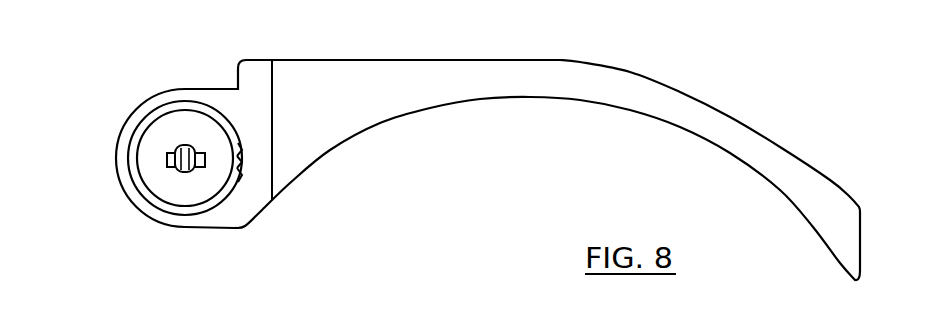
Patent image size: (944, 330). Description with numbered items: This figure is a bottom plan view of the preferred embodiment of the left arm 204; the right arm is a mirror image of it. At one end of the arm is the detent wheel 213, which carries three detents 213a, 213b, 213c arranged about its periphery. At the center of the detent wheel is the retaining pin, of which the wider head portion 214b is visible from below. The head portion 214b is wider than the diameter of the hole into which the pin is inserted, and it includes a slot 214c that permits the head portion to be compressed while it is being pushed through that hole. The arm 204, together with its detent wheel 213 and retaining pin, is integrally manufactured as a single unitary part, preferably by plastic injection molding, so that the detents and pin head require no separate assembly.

The left arm 204 is at (438, 73).
The detent wheel 213 is at (172, 128).
The detent 213a is at (240, 150).
The detent 213b is at (241, 162).
The detent 213c is at (241, 175).
The head portion 214b is at (169, 167).
The slot 214c is at (185, 173).